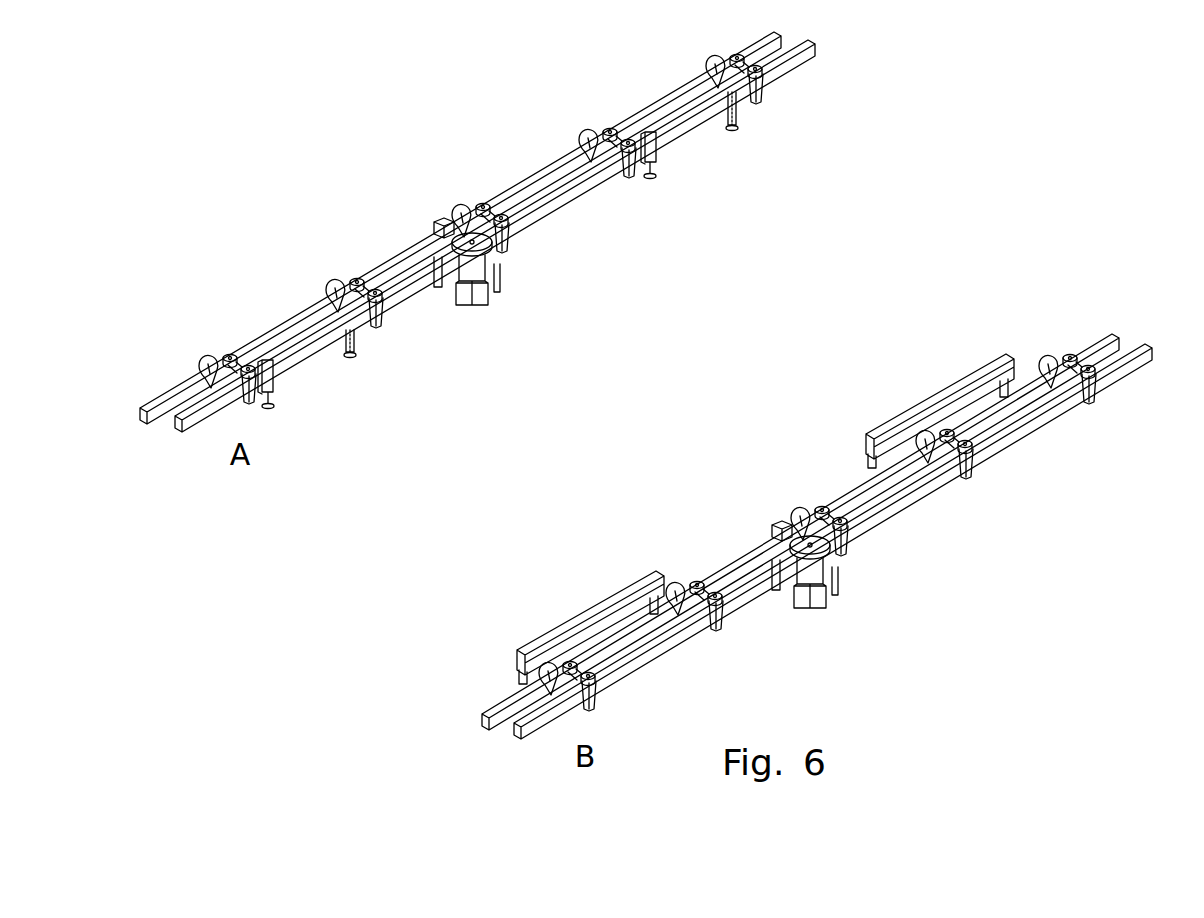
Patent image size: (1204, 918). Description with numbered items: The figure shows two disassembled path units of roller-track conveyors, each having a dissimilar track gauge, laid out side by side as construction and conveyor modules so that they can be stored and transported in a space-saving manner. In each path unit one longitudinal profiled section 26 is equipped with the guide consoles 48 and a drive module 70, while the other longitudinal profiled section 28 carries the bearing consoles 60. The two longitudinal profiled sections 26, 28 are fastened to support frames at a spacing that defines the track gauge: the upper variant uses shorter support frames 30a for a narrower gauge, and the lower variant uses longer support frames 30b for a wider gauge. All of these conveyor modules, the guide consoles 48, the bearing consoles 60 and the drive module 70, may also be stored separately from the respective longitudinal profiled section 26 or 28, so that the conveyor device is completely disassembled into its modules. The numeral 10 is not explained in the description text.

In FIG. 6A, the rail assembly 10 is at (240, 262).
In FIG. 6B, the rail assembly 10 is at (1015, 290).
In FIG. 6A, the longitudinal profiled section 26 is at (808, 62).
In FIG. 6B, the longitudinal profiled section 26 is at (1146, 343).
In FIG. 6A, the longitudinal profiled section 28 is at (760, 36).
In FIG. 6B, the longitudinal profiled section 28 is at (1098, 333).
In FIG. 6A, the shorter support frame 30a is at (695, 120).
In FIG. 6B, the longer support frame 30b is at (962, 378).
In FIG. 6A, the guide console 48 is at (255, 415).
In FIG. 6B, the guide console 48 is at (1100, 400).
In FIG. 6A, the bearing console 60 is at (195, 350).
In FIG. 6B, the bearing console 60 is at (1046, 356).
In FIG. 6A, the drive module 70 is at (498, 312).
In FIG. 6B, the drive module 70 is at (856, 598).